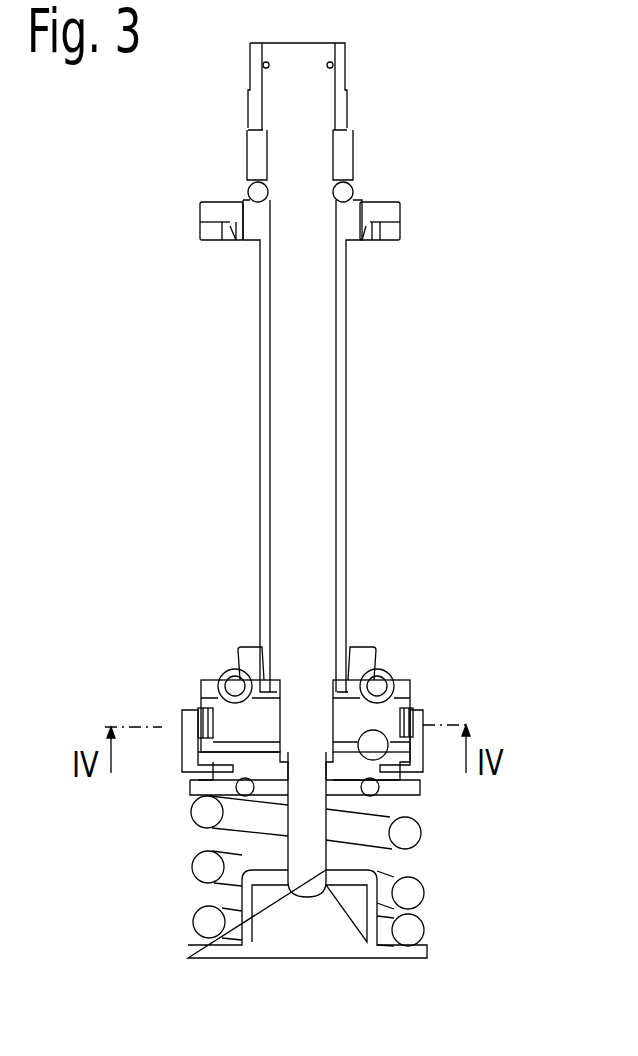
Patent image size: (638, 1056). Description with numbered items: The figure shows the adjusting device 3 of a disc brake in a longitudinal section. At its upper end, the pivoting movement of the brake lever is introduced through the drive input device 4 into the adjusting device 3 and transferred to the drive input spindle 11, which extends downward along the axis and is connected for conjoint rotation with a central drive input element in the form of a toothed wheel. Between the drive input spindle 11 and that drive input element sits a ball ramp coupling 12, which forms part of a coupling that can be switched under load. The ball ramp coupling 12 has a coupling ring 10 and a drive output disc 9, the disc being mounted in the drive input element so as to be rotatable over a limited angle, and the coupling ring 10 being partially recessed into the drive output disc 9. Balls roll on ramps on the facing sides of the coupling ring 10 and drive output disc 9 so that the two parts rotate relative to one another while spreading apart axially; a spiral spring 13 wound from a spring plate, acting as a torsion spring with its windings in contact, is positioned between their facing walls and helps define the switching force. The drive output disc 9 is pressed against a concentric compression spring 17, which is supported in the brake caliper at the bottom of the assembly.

The adjusting device 3 is at (398, 154).
The drive input device 4 is at (215, 249).
The drive output disc 9 is at (200, 762).
The coupling ring 10 is at (392, 705).
The drive input spindle 11 is at (358, 354).
The ball ramp coupling 12 is at (172, 722).
The spiral spring 13 is at (415, 713).
The compression spring 17 is at (207, 920).